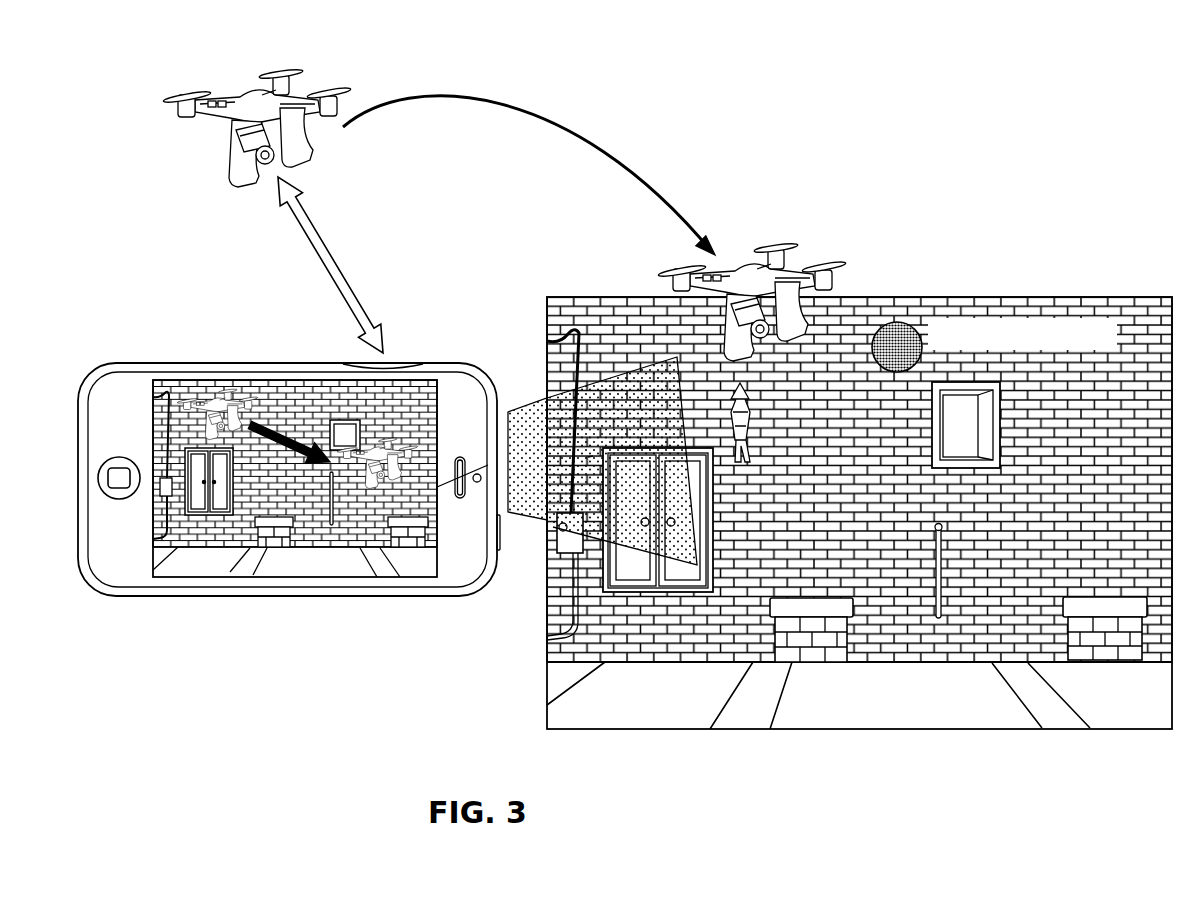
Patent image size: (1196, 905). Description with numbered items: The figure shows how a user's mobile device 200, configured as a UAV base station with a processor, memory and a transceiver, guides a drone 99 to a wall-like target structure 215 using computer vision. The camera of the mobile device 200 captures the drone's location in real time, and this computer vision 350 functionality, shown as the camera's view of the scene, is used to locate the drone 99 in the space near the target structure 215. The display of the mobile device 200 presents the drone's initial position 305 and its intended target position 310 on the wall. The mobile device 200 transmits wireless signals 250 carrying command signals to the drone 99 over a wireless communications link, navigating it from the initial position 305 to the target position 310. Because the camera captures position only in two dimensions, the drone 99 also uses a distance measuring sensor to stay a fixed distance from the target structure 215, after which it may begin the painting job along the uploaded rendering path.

The UAV or drone 99 is at (307, 67).
The mobile device 200 is at (335, 437).
The target structure 215 is at (859, 494).
The wireless signals 250 is at (297, 228).
The initial position 305 is at (268, 380).
The target position 310 is at (902, 322).
The computer vision 350 is at (523, 534).